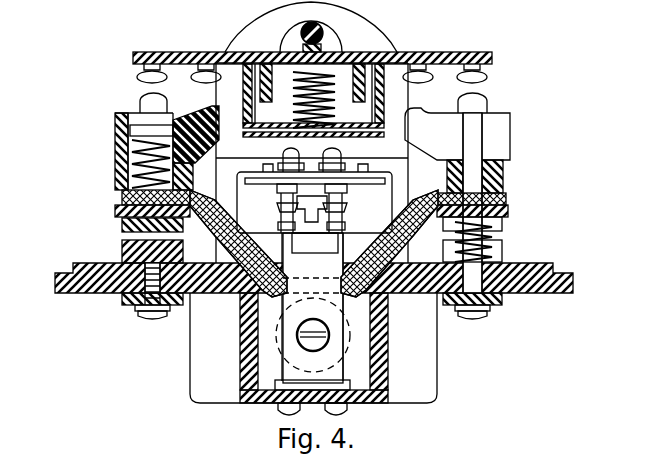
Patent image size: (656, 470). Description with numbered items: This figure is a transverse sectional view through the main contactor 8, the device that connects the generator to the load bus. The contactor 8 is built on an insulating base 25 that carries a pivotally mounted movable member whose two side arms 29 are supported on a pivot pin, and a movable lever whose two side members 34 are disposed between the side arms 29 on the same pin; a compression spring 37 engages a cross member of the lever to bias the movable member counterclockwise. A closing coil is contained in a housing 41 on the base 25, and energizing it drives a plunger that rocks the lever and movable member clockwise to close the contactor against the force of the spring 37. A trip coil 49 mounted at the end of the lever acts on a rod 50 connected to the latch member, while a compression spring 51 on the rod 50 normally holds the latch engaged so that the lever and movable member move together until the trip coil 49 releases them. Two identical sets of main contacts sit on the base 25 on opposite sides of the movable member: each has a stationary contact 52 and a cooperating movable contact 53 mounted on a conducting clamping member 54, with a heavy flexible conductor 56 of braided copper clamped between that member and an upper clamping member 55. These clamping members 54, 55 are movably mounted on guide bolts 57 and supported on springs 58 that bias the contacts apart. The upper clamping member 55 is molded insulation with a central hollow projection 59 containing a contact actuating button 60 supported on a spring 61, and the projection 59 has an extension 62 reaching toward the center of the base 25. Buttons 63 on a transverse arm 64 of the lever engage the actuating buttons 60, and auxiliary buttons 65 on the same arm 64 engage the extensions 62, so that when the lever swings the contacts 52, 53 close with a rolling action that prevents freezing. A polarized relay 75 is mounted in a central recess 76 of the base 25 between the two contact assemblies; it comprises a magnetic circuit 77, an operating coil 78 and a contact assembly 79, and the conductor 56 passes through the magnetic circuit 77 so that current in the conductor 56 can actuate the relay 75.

The main contactor 8 is at (550, 148).
The insulating base 25 is at (56, 283).
The side arms 29 is at (243, 82).
The side members 34 is at (270, 79).
The compression spring 37 is at (291, 108).
The housing 41 is at (403, 188).
The trip coil 49 is at (353, 21).
The rod 50 is at (307, 24).
The compression spring 51 is at (326, 43).
The stationary contact 52 is at (122, 246).
The movable contact 53 is at (122, 224).
The conducting clamping member 54 is at (120, 208).
The upper clamping member 55 is at (116, 160).
The flexible conductor 56 is at (248, 254).
The guide bolts 57 is at (478, 178).
The springs 58 is at (491, 252).
The hollow projection 59 is at (118, 121).
The contact actuating button 60 is at (140, 106).
The spring 61 is at (186, 175).
The extension 62 is at (210, 108).
The buttons 63 is at (138, 78).
The transverse arm 64 is at (219, 52).
The auxiliary buttons 65 is at (203, 81).
The polarized relay 75 is at (323, 273).
The central recess 76 is at (386, 354).
The magnetic circuit 77 is at (341, 257).
The operating coil 78 is at (344, 322).
The contact assembly 79 is at (376, 219).